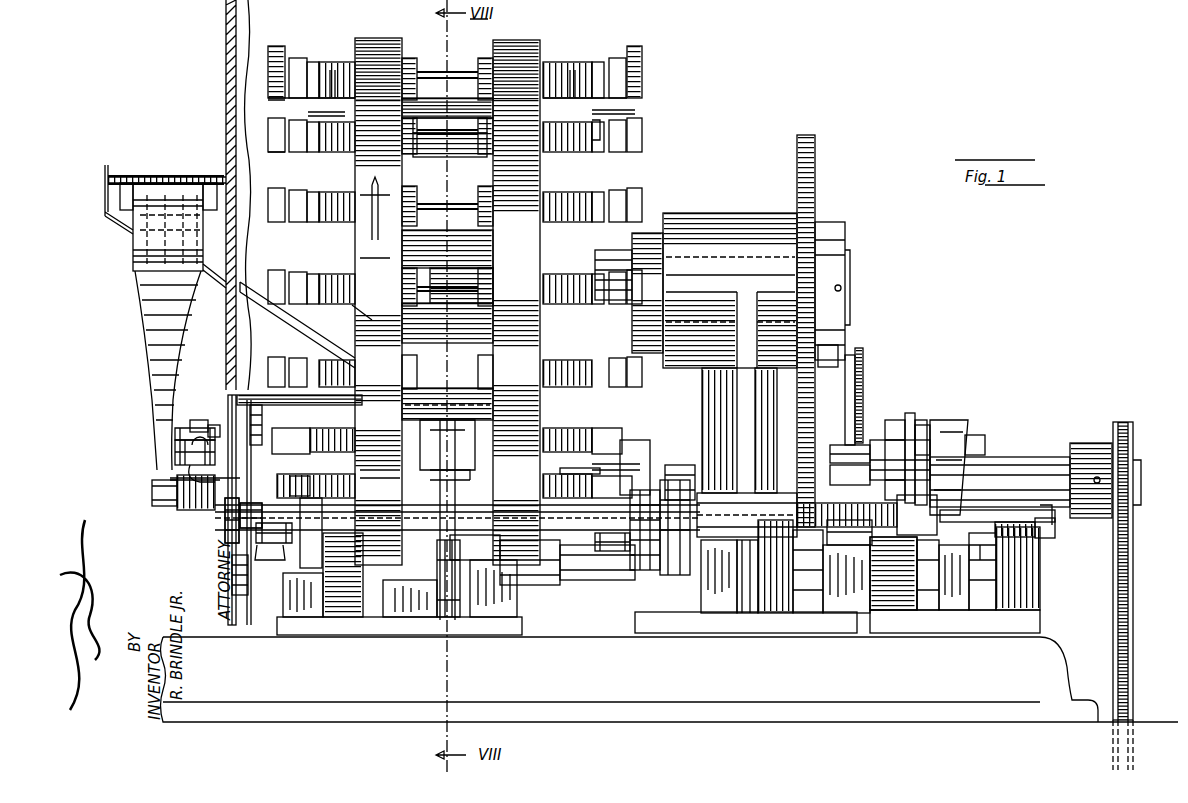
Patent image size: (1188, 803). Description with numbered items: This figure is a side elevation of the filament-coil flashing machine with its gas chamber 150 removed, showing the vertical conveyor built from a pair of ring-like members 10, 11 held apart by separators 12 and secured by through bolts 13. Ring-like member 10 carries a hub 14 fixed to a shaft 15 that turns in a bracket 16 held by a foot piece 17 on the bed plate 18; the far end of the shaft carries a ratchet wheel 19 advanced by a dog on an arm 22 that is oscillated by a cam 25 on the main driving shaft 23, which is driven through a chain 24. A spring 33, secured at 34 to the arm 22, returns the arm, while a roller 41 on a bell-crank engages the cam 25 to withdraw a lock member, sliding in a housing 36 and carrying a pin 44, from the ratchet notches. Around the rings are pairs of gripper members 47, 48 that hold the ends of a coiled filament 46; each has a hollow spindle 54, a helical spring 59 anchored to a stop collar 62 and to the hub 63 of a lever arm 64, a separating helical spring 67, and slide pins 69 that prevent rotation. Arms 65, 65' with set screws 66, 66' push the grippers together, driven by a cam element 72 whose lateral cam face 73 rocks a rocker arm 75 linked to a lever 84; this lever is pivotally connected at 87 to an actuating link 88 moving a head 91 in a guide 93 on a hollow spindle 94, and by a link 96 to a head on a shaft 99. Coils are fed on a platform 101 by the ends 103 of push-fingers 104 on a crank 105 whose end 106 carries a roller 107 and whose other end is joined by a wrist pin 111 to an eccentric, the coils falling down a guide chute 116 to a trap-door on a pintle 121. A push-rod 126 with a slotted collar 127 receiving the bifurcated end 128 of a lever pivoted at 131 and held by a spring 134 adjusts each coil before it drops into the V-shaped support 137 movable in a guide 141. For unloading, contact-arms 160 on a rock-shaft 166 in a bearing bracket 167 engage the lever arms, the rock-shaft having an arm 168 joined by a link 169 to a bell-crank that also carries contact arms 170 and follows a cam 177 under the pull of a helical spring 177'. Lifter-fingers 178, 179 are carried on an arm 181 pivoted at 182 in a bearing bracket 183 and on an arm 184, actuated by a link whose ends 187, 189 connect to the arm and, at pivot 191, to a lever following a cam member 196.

The ring-like member 10 is at (520, 44).
The ring-like member 11 is at (382, 42).
The separators 12 is at (460, 245).
The through bolts 13 is at (592, 120).
The hub 14 is at (605, 244).
The shaft 15 is at (700, 255).
The bracket 16 is at (757, 230).
The foot piece 17 is at (724, 615).
The bed plate 18 is at (586, 634).
The ratchet wheel 19 is at (815, 200).
The arm 22 is at (838, 350).
The main driving shaft 23 is at (1009, 460).
The chain 24 is at (1135, 550).
The cam 25 is at (842, 440).
The spring 33 is at (865, 363).
The spring securing point 34 is at (868, 347).
The housing 36 is at (825, 610).
The roller 41 is at (868, 464).
The pin 44 is at (905, 440).
The filament 46 is at (152, 140).
The gripper member 47 is at (468, 55).
The gripper member 48 is at (414, 57).
The hollow spindle 54 is at (553, 62).
The helical spring 59 is at (617, 58).
The stop collar 62 is at (598, 62).
The hub 63 is at (634, 96).
The lever arm 64 is at (644, 44).
The arm 65 is at (647, 578).
The arm 65' is at (220, 549).
The set screw 66 is at (679, 467).
The set screw 66' is at (208, 520).
The helical spring 67 is at (572, 68).
The slide pins 69 is at (609, 432).
The cam element 72 is at (965, 420).
The lateral cam face 73 is at (982, 438).
The rocker arm 75 is at (987, 550).
The lever 84 is at (1050, 538).
The pivotal connection 87 is at (1052, 518).
The actuating link 88 is at (988, 498).
The head 91 is at (905, 545).
The guide 93 is at (870, 555).
The hollow spindle 94 is at (580, 585).
The link 96 is at (950, 550).
The shaft 99 is at (538, 605).
The platform 101 is at (110, 180).
The ends of push-fingers 103 is at (195, 176).
The push-fingers 104 is at (166, 254).
The crank 105 is at (153, 337).
The end of crank 106 is at (118, 214).
The roller 107 is at (120, 190).
The wrist pin 111 is at (152, 490).
The guide chute 116 is at (295, 335).
The pintle 121 is at (170, 479).
The push-rod 126 is at (190, 467).
The slotted collar 127 is at (175, 442).
The bifurcated end 128 is at (182, 424).
The pivot 131 is at (188, 415).
The spring 134 is at (222, 428).
The V-shaped support 137 is at (440, 620).
The guide 141 is at (352, 617).
The chamber 150 is at (226, 58).
The contact-arms 160 is at (647, 462).
The rock-shaft 166 is at (685, 582).
The bearing bracket 167 is at (722, 490).
The arm 168 is at (923, 430).
The link 169 is at (918, 415).
The contact arms 170 is at (615, 555).
The cam 177 is at (889, 434).
The helical spring 177' is at (883, 600).
The lifter-finger 178 is at (443, 405).
The lifter finger 179 is at (568, 450).
The arm 181 is at (560, 548).
The pivot 182 is at (510, 580).
The bearing bracket 183 is at (463, 620).
The arm 184 is at (450, 473).
The end of link 187 is at (379, 463).
The end of link 189 is at (258, 420).
The pivot 191 is at (228, 398).
The cam member 196 is at (398, 620).